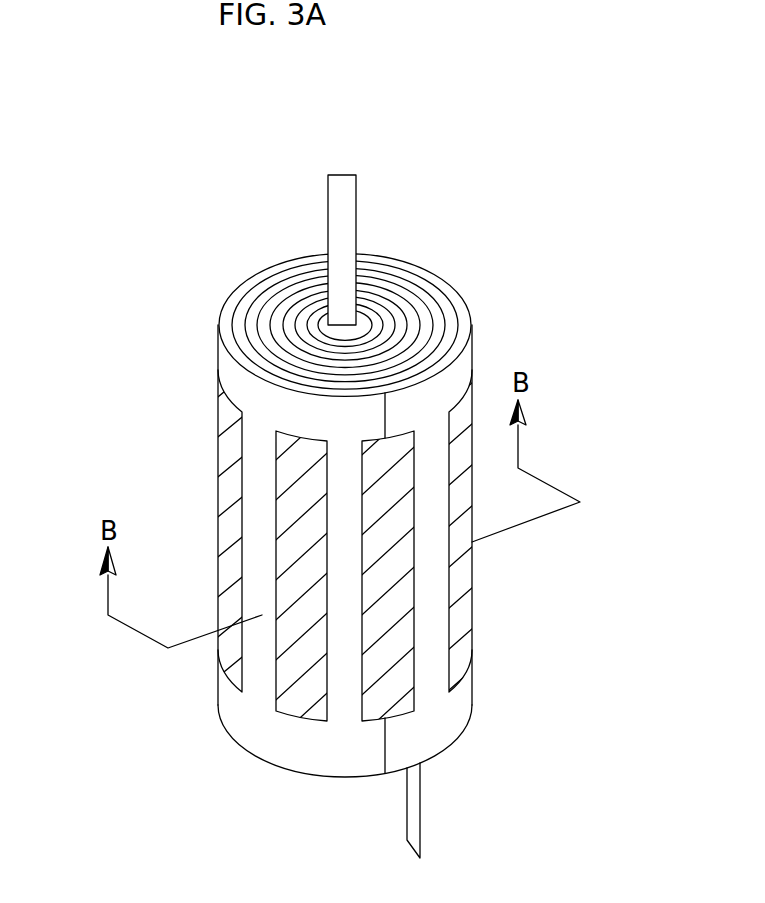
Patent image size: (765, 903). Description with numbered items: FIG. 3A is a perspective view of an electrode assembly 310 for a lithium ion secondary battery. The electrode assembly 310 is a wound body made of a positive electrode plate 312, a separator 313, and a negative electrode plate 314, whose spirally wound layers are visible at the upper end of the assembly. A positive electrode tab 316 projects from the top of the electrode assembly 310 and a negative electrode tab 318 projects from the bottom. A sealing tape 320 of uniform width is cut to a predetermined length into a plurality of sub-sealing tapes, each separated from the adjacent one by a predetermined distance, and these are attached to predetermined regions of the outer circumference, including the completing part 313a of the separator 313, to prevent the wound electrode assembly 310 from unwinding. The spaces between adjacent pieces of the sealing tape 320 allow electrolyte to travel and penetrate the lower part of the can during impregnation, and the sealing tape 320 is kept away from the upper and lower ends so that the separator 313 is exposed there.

The electrode assembly 310 is at (130, 138).
The positive electrode plate 312 is at (473, 338).
The separator 313 is at (452, 323).
The completing part 313a is at (388, 747).
The negative electrode plate 314 is at (445, 287).
The positive electrode tab 316 is at (345, 185).
The negative electrode tab 318 is at (408, 797).
The sealing tape 320 is at (462, 615).